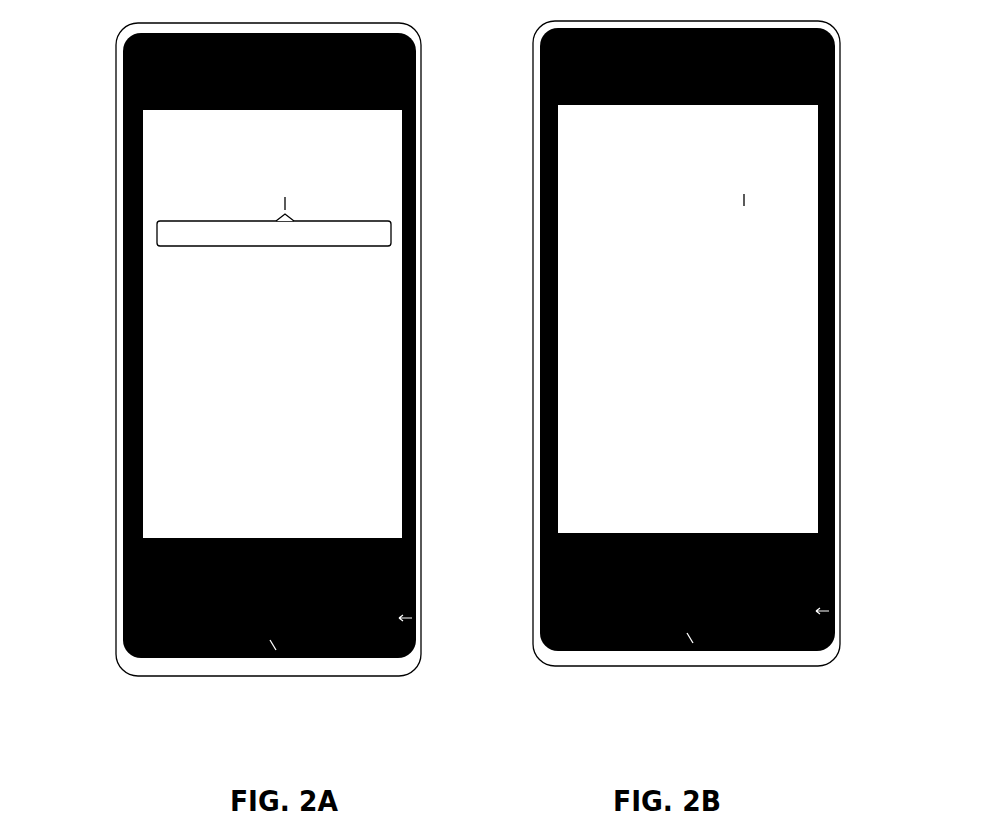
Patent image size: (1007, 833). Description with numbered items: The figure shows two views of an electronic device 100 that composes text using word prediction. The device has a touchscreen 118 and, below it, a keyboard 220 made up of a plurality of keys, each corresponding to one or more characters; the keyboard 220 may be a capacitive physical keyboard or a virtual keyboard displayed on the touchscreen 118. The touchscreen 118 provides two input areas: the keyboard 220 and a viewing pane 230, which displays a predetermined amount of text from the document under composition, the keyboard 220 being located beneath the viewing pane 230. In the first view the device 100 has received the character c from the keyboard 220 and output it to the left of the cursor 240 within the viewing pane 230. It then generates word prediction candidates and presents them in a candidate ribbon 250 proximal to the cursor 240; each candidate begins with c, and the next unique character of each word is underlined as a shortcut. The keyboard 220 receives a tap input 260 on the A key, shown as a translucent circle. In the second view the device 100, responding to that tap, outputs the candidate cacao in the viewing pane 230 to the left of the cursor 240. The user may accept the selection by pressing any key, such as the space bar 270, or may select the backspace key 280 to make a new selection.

In FIG. 2A, the electronic device 100 is at (237, 349).
In FIG. 2B, the electronic device 100 is at (646, 343).
In FIG. 2A, the touchscreen 118 is at (168, 482).
In FIG. 2B, the touchscreen 118 is at (585, 487).
In FIG. 2A, the keyboard 220 is at (233, 619).
In FIG. 2B, the keyboard 220 is at (651, 644).
In FIG. 2A, the viewing pane 230 is at (147, 287).
In FIG. 2B, the viewing pane 230 is at (555, 272).
In FIG. 2A, the cursor 240 is at (382, 199).
In FIG. 2B, the cursor 240 is at (819, 190).
In FIG. 2A, the candidate ribbon 250 is at (148, 222).
In FIG. 2A, the tap input 260 is at (99, 611).
In FIG. 2A, the space bar 270 is at (289, 683).
In FIG. 2B, the space bar 270 is at (685, 647).
In FIG. 2A, the backspace key 280 is at (445, 608).
In FIG. 2B, the backspace key 280 is at (862, 599).